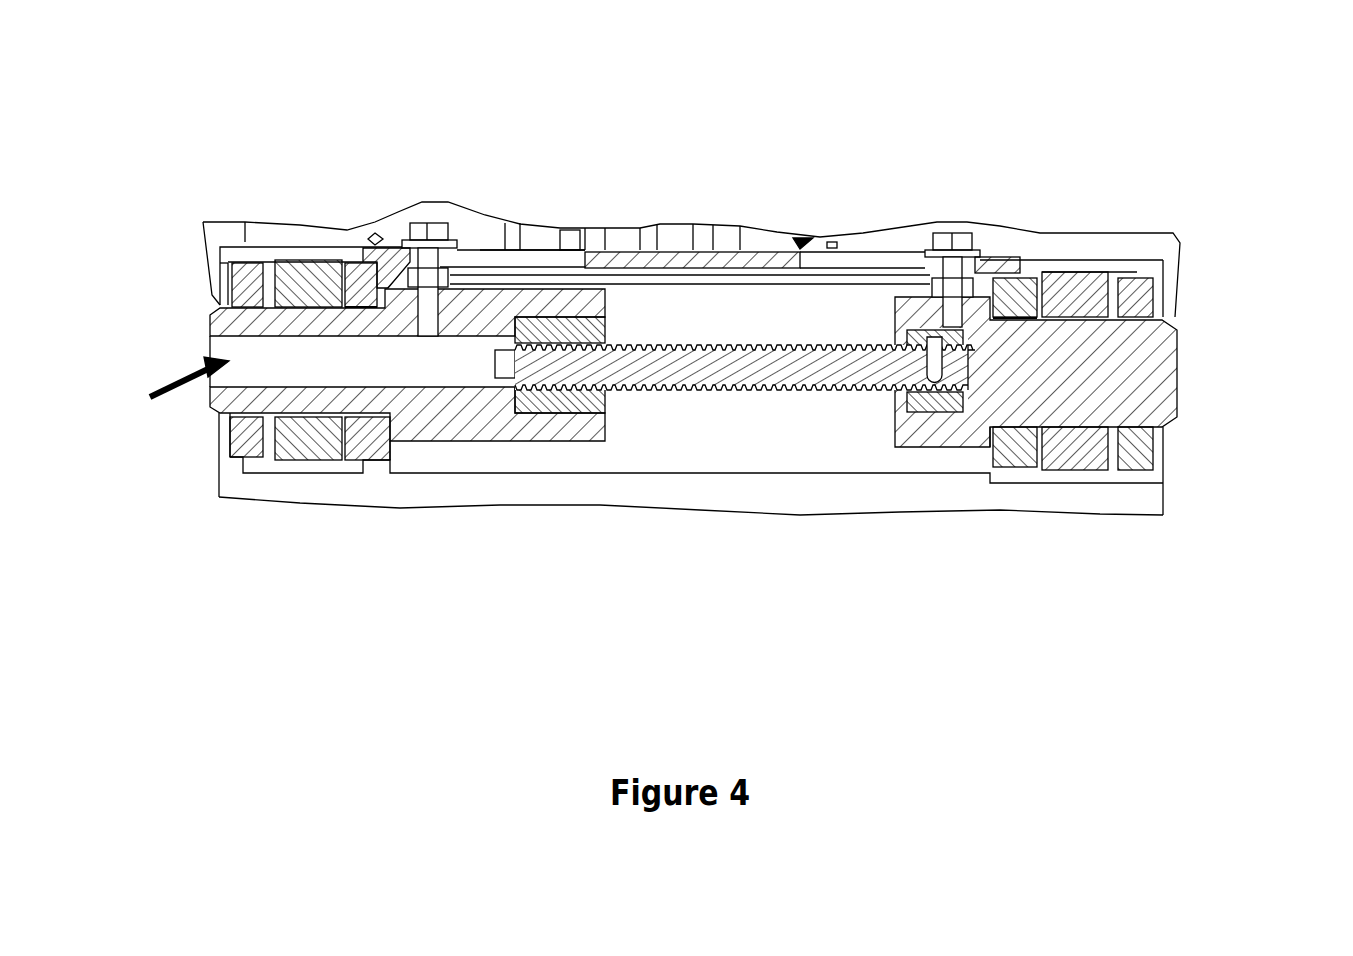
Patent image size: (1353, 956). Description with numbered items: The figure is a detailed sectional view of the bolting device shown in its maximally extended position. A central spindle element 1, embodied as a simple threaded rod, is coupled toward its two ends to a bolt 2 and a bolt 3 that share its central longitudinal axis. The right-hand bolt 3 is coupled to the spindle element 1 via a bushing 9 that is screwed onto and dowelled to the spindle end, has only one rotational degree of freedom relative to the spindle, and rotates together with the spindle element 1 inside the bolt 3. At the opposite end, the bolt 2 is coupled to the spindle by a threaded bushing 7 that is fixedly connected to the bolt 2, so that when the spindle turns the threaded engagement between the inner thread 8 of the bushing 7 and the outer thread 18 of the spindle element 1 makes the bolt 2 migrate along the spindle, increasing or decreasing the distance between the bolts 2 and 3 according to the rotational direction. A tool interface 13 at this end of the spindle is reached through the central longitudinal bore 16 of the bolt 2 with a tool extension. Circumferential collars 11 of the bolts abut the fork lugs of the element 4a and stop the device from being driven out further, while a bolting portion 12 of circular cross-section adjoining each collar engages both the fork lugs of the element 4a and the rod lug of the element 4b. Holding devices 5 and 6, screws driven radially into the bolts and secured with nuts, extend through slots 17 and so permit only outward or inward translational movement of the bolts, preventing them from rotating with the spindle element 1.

The spindle element 1 is at (852, 370).
The bolt 2 is at (213, 322).
The bolt 3 is at (1163, 393).
The element with fork lugs 4a is at (358, 277).
The element with rod lug 4b is at (307, 443).
The holding device 5 is at (418, 236).
The holding device 6 is at (963, 240).
The threaded bushing 7 is at (565, 328).
The inner thread 8 is at (540, 384).
The bushing 9 is at (953, 407).
The circumferential collar 11 is at (702, 563).
The bolting portion 12 is at (372, 307).
The tool interface 13 is at (505, 368).
The central longitudinal bore 16 is at (157, 395).
The slot 17 is at (490, 258).
The outer thread 18 is at (805, 390).